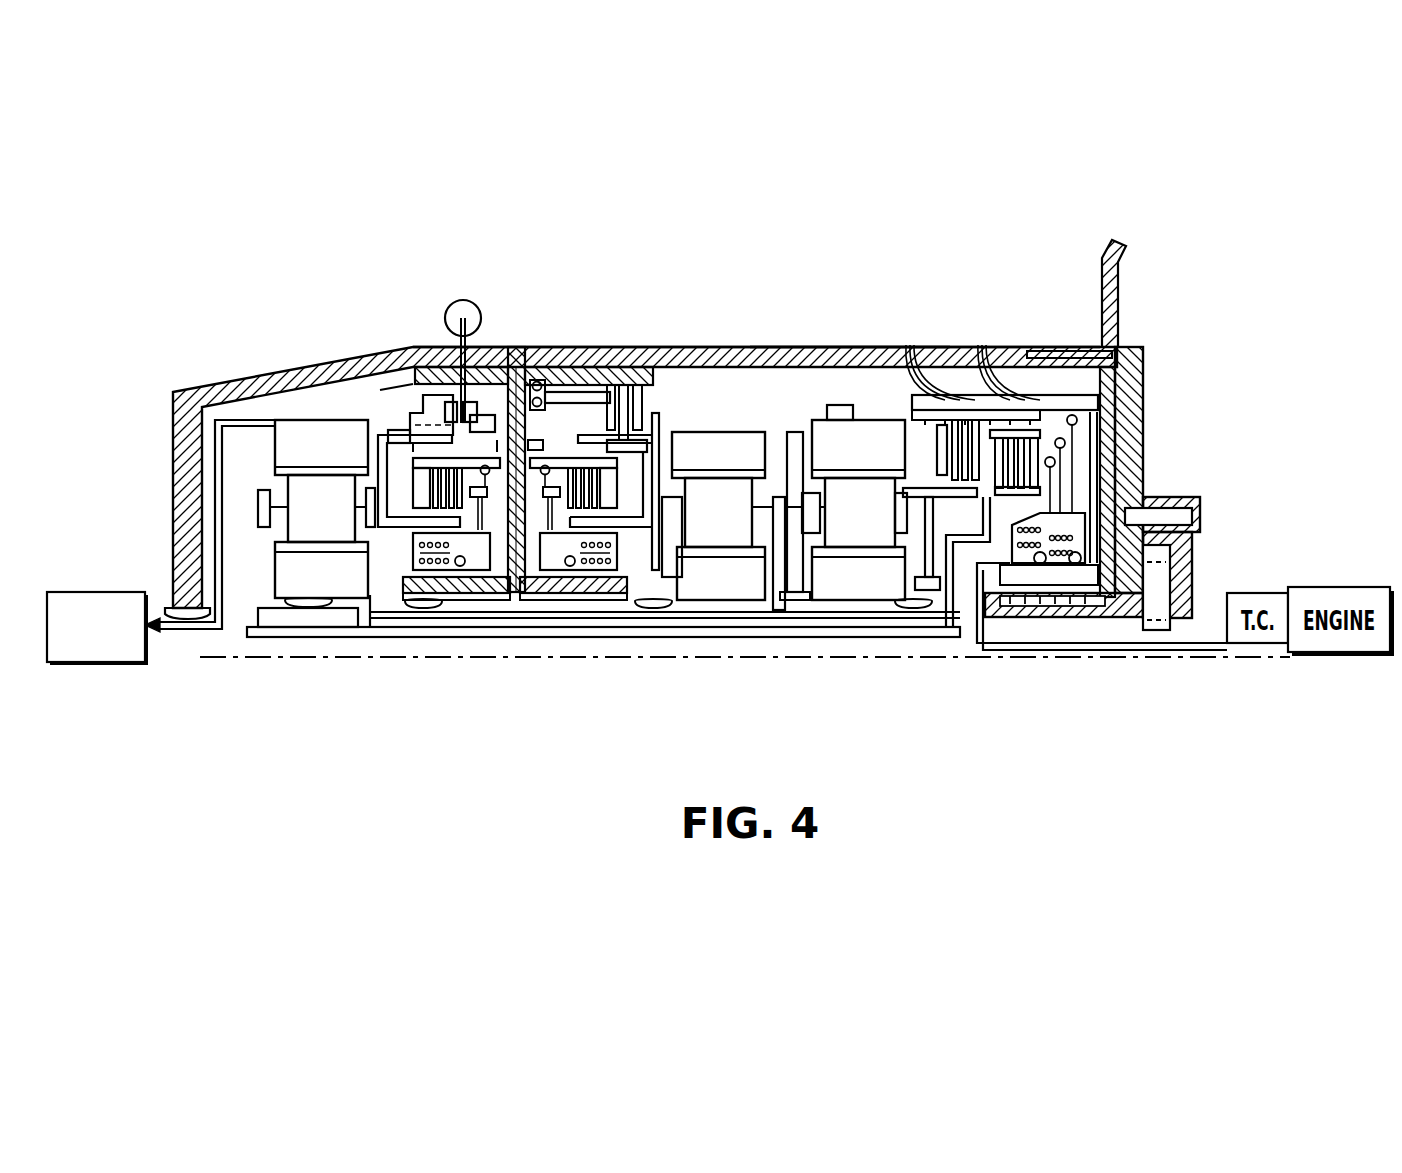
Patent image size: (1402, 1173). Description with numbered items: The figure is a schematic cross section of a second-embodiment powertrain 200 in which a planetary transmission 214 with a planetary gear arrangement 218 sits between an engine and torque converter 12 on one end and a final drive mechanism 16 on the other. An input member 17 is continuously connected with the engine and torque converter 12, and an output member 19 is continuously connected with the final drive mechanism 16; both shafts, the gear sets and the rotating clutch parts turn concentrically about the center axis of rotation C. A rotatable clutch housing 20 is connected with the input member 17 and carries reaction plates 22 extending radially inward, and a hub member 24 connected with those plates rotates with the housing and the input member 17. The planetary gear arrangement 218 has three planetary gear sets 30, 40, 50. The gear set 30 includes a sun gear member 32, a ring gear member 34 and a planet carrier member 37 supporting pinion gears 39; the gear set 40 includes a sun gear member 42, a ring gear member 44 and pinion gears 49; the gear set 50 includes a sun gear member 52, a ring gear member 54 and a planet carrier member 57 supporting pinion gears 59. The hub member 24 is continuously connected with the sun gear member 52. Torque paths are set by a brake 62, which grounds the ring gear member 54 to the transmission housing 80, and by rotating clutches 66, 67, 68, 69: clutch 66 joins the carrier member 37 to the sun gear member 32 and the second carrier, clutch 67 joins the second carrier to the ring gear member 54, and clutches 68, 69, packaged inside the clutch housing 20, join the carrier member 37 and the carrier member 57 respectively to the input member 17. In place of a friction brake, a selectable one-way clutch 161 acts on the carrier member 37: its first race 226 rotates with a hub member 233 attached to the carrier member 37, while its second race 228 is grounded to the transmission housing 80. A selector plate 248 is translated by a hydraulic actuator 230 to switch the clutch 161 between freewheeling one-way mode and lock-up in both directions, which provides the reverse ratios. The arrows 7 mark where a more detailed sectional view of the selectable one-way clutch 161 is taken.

The section arrows 7 is at (412, 440).
The engine and torque converter 12 is at (1260, 518).
The final drive mechanism 16 is at (97, 586).
The input member 17 is at (1200, 652).
The output member 19 is at (185, 633).
The clutch housing 20 is at (980, 398).
The reaction plates 22 is at (968, 356).
The hub member 24 is at (975, 532).
The planetary gear set 30 is at (305, 624).
The sun gear member 32 is at (306, 588).
The ring gear member 34 is at (306, 460).
The planet carrier member 37 is at (286, 506).
The pinion gears 39 is at (306, 523).
The planetary gear set 40 is at (732, 610).
The sun gear member 42 is at (706, 590).
The ring gear member 44 is at (703, 466).
The pinion gears 49 is at (703, 525).
The planetary gear set 50 is at (855, 610).
The sun gear member 52 is at (843, 590).
The ring gear member 54 is at (843, 462).
The planet carrier member 57 is at (823, 515).
The pinion gears 59 is at (845, 525).
The brake 62 is at (660, 404).
The clutch 66 is at (414, 479).
The clutch 67 is at (624, 489).
The clutch 68 is at (1050, 424).
The clutch 69 is at (923, 448).
The transmission housing 80 is at (700, 346).
The selectable one-way clutch 161 is at (392, 435).
The powertrain 200 is at (855, 292).
The planetary transmission 214 is at (705, 292).
The planetary gear arrangement 218 is at (822, 250).
The first race 226 is at (412, 445).
The second race 228 is at (471, 402).
The hydraulic actuator 230 is at (463, 300).
The hub member 233 is at (395, 400).
The selector plate 248 is at (451, 402).
The center axis of rotation C is at (1230, 662).